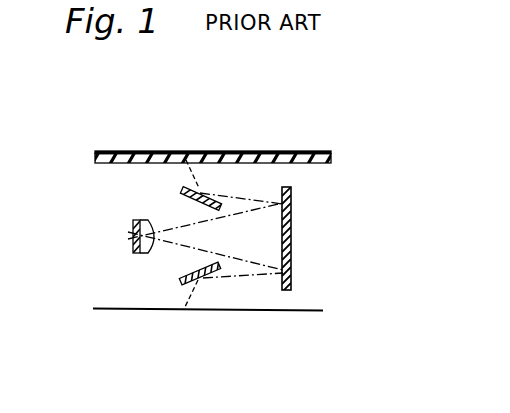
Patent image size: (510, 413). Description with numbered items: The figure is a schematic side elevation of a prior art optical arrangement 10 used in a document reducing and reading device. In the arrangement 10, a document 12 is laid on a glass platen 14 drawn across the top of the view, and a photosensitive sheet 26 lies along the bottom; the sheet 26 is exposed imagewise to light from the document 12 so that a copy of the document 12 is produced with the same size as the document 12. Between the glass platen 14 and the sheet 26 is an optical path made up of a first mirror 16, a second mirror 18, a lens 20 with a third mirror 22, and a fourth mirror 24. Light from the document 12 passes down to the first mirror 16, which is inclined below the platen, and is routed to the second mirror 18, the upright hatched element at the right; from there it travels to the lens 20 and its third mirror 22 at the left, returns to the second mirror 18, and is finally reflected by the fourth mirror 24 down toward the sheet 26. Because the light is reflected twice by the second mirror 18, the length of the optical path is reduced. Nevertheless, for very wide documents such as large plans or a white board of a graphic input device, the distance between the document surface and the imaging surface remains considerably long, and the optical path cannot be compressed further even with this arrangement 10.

The optical arrangement 10 is at (378, 159).
The document 12 is at (181, 152).
The glass platen 14 is at (238, 157).
The first mirror 16 is at (181, 192).
The second mirror 18 is at (292, 216).
The lens 20 is at (134, 240).
The third mirror 22 is at (133, 223).
The fourth mirror 24 is at (180, 280).
The photosensitive sheet 26 is at (310, 309).